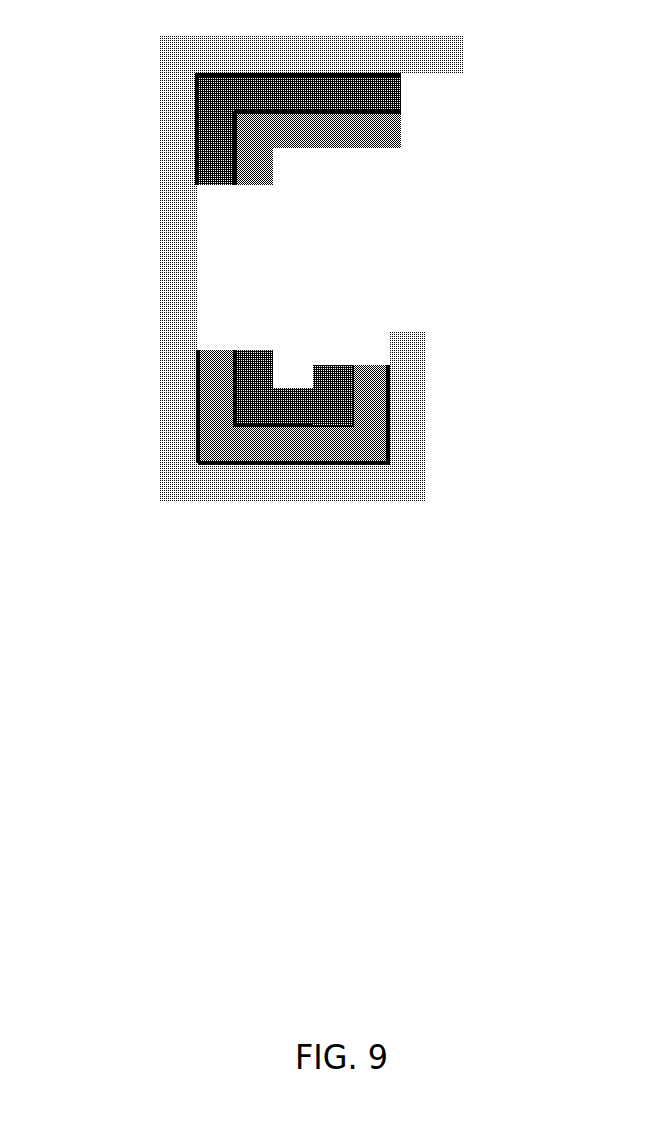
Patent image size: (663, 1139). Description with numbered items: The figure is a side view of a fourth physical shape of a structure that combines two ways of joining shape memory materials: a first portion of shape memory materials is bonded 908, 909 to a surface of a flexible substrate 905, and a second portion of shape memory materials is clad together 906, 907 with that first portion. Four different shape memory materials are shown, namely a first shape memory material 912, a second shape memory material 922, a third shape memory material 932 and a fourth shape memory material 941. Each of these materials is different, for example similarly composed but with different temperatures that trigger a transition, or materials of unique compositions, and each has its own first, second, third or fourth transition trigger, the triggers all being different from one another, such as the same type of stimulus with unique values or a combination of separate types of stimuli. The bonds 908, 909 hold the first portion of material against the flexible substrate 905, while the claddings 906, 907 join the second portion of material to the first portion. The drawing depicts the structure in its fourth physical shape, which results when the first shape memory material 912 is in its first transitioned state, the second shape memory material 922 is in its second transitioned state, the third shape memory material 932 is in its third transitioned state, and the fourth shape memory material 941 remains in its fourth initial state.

The flexible substrate 905 is at (172, 262).
The bond to flexible substrate 908 is at (401, 77).
The cladding 907 is at (401, 114).
The second shape memory material 922 is at (215, 179).
The fourth shape memory material 941 is at (287, 142).
The bond to flexible substrate 909 is at (200, 347).
The cladding 906 is at (237, 345).
The third shape memory material 932 is at (335, 368).
The first shape memory material 912 is at (370, 373).